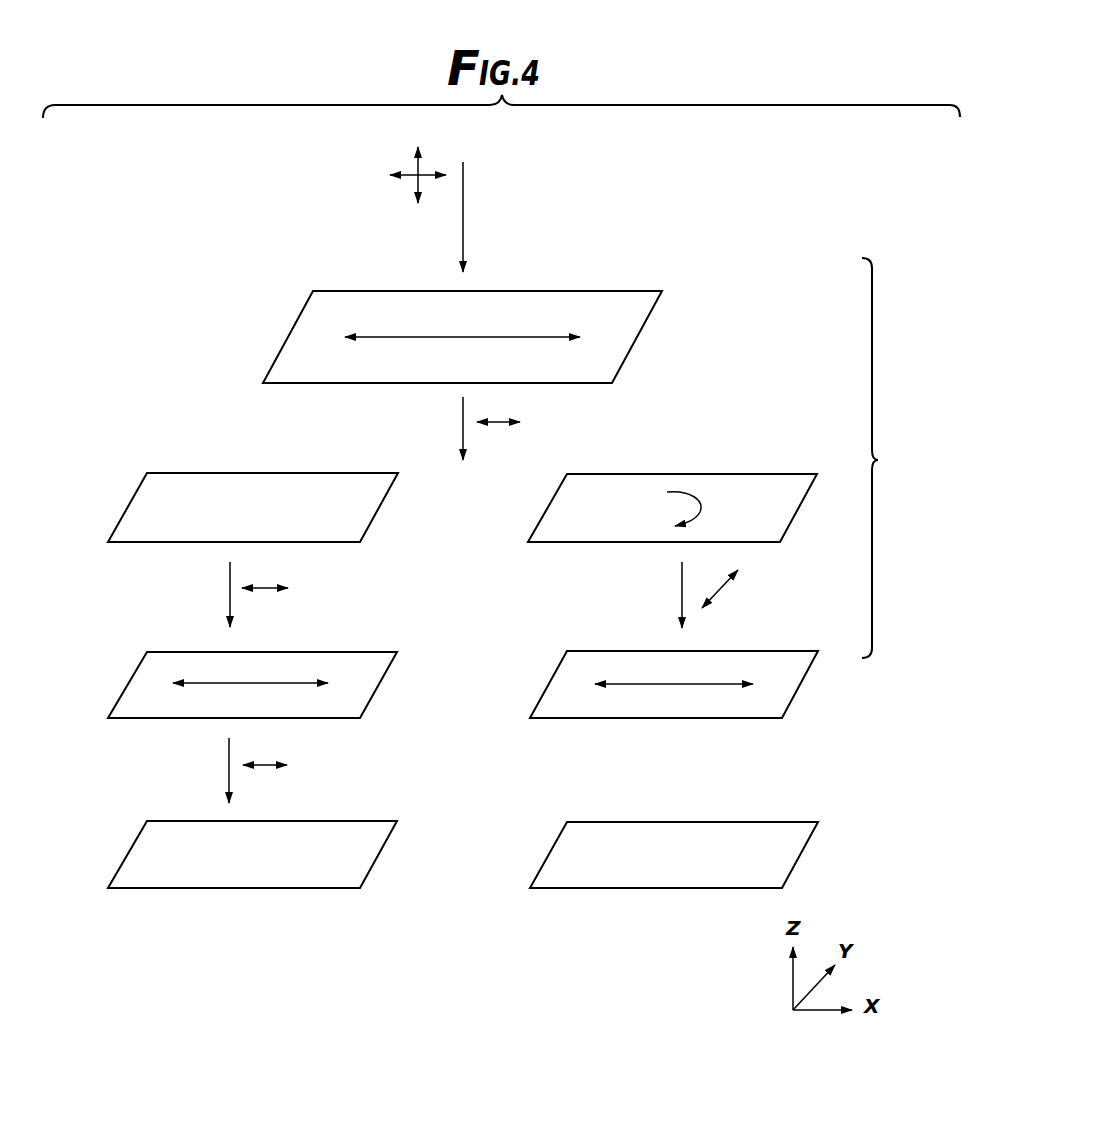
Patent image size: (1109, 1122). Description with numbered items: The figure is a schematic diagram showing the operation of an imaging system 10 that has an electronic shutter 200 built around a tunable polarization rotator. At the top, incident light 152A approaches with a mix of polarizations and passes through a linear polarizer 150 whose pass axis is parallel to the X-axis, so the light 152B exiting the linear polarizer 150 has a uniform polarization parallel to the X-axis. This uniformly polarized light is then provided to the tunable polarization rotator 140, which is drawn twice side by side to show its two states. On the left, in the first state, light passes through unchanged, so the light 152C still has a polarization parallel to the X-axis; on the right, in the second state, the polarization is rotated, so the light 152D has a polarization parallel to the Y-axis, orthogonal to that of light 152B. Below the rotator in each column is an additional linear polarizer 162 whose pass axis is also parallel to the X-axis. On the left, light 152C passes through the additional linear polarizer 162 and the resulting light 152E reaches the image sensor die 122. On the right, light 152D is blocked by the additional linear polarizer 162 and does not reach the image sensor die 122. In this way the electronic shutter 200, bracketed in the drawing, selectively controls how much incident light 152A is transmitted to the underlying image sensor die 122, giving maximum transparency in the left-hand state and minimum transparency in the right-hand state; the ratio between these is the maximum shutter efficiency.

The imaging system 10 is at (173, 197).
The linear polarizer 150 is at (622, 303).
The tunable polarization rotator 140 is at (176, 495).
The additional linear polarizer 162 is at (353, 698).
The image sensor die 122 is at (180, 868).
The incident light 152A is at (463, 185).
The light exiting the linear polarizer 152B is at (463, 410).
The light passing through the tunable polarization rotator in the first state 152C is at (230, 572).
The light passing through the tunable polarization rotator in the second state 152D is at (682, 572).
The light from the additional linear polarizer 152E is at (229, 763).
The electronic shutter 200 is at (878, 460).